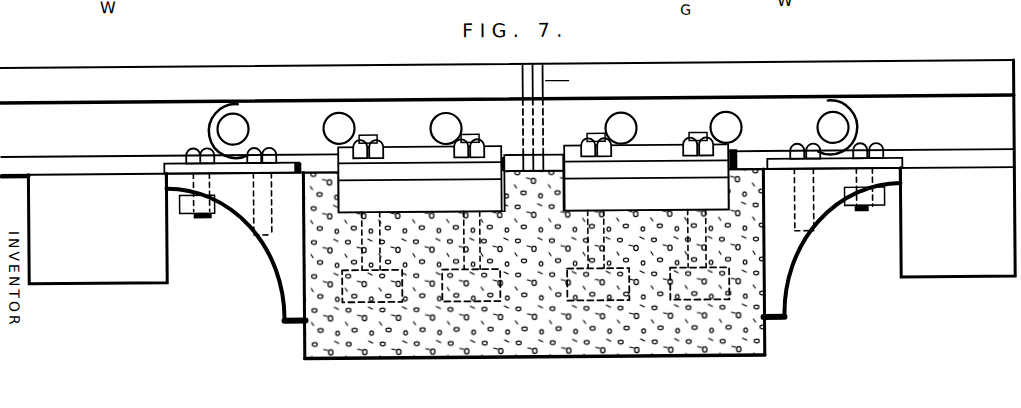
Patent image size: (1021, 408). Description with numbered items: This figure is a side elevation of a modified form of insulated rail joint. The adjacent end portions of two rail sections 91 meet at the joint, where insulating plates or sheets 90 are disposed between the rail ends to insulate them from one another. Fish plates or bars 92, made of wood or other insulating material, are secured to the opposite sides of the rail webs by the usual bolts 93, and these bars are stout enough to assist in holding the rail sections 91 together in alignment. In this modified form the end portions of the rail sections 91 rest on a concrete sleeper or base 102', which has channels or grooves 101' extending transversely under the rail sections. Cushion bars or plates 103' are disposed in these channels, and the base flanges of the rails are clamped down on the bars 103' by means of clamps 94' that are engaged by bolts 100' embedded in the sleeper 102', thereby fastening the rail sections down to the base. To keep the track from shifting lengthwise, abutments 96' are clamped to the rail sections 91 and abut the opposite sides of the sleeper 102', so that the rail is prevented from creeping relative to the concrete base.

The insulating plates or sheets 90 is at (541, 84).
The rail sections 91 is at (340, 80).
The fish plates or bars 92 is at (403, 116).
The bolts 93 is at (325, 121).
The clamps 94' is at (533, 189).
The abutments 96' is at (533, 232).
The bolts 100' is at (536, 282).
The channels or grooves 101' is at (533, 180).
The concrete sleeper or base 102' is at (533, 264).
The cushion bars or plates 103' is at (534, 226).